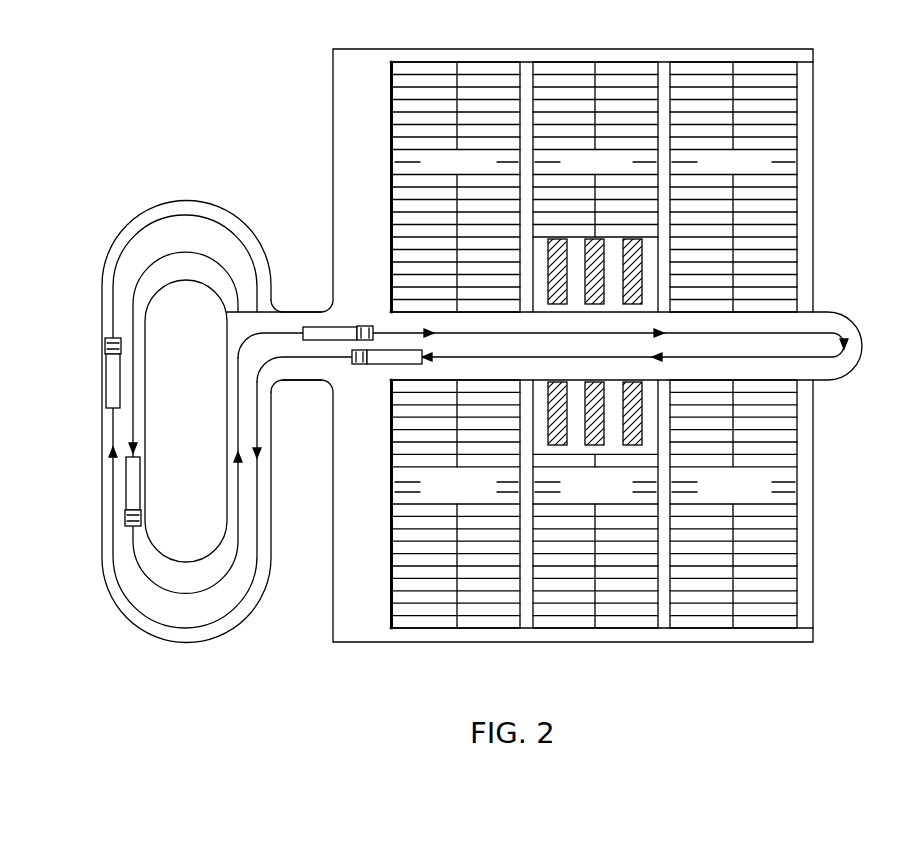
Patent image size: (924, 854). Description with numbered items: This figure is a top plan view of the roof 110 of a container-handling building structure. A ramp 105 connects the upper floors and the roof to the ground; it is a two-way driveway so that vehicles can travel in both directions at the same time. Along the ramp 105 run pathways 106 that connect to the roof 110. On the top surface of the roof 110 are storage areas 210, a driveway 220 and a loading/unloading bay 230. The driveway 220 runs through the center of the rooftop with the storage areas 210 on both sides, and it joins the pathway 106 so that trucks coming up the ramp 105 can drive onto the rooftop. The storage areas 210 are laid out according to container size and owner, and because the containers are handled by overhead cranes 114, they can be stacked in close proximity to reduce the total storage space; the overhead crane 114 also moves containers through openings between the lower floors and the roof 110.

The ramp 105 is at (188, 200).
The pathway 106 is at (310, 310).
The roof 110 is at (846, 125).
The overhead crane 114 is at (664, 64).
The storage area 210 is at (438, 172).
The driveway 220 is at (434, 355).
The loading/unloading bay 230 is at (563, 304).